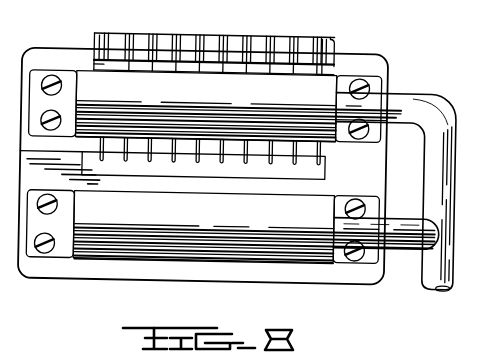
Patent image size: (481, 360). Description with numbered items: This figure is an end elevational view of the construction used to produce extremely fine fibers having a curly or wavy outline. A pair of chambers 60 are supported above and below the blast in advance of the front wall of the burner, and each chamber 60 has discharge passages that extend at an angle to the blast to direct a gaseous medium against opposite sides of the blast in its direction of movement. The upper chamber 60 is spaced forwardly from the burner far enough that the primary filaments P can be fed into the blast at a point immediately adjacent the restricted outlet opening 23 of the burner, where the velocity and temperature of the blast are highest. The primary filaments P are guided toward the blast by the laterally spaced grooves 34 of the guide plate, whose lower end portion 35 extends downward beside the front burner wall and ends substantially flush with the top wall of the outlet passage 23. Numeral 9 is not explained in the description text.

The housing frame 9 is at (22, 74).
The grooves 34 is at (96, 48).
The lower end portion 35 is at (331, 49).
The primary filaments P is at (97, 70).
The chambers 60 is at (307, 103).
The restricted outlet passage 23 is at (327, 160).